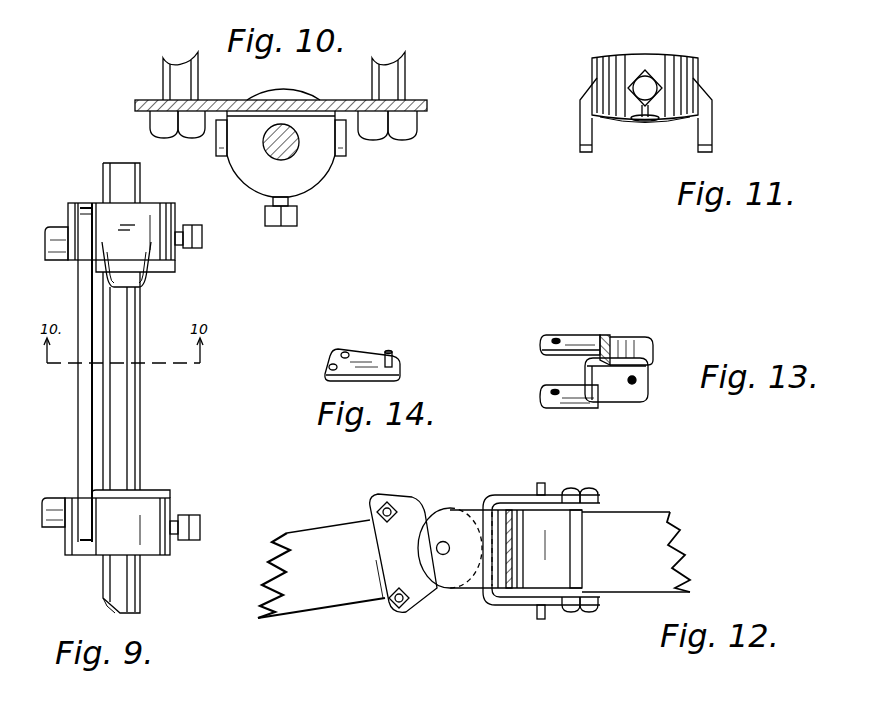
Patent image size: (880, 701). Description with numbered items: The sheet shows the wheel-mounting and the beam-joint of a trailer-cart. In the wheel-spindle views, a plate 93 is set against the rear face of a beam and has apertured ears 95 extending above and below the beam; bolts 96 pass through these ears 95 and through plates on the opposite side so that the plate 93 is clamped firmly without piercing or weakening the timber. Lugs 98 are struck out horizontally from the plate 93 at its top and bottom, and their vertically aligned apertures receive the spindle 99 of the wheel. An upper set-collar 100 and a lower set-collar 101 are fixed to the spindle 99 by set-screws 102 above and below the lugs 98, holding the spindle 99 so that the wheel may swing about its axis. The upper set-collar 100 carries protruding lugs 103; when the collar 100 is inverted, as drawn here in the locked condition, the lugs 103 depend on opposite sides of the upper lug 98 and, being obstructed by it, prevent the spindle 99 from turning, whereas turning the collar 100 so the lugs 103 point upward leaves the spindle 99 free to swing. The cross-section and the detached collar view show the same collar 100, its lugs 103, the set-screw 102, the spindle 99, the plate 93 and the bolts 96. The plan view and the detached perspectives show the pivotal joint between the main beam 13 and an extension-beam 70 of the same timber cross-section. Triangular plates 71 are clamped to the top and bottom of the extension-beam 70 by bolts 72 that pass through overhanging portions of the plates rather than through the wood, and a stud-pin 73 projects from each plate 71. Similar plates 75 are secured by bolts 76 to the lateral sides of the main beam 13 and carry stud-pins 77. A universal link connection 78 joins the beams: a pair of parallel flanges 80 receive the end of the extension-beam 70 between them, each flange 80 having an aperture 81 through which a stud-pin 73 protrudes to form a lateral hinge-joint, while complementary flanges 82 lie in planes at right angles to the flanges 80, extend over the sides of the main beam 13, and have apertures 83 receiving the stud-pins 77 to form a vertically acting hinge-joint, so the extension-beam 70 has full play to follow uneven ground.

In FIG. 12, the main beam 13 is at (636, 552).
In FIG. 12, the extension-beam 70 is at (321, 569).
In FIG. 14, the triangular plate 71 is at (360, 362).
In FIG. 12, the triangular plate 71 is at (390, 538).
In FIG. 12, the bolt 72 is at (392, 508).
In FIG. 14, the stud-pin 73 is at (392, 358).
In FIG. 12, the stud-pin 73 is at (437, 549).
In FIG. 12, the plate 75 is at (600, 500).
In FIG. 12, the bolt 76 is at (580, 552).
In FIG. 12, the stud-pin 77 is at (546, 486).
In FIG. 13, the universal link connection 78 is at (602, 342).
In FIG. 12, the universal link connection 78 is at (492, 495).
In FIG. 13, the flange 80 is at (637, 392).
In FIG. 13, the aperture 81 is at (633, 376).
In FIG. 13, the complementary flange 82 is at (548, 344).
In FIG. 13, the aperture 83 is at (557, 391).
In FIG. 9, the plate 93 is at (80, 405).
In FIG. 10, the plate 93 is at (215, 100).
In FIG. 9, the apertured ear 95 is at (85, 213).
In FIG. 9, the bolt 96 is at (60, 252).
In FIG. 10, the bolt 96 is at (170, 78).
In FIG. 9, the lug 98 is at (175, 268).
In FIG. 9, the spindle 99 is at (125, 587).
In FIG. 10, the spindle 99 is at (293, 148).
In FIG. 9, the upper set-collar 100 is at (165, 218).
In FIG. 10, the upper set-collar 100 is at (305, 180).
In FIG. 11, the upper set-collar 100 is at (686, 75).
In FIG. 9, the lower set-collar 101 is at (170, 548).
In FIG. 9, the set-screw 102 is at (202, 236).
In FIG. 10, the set-screw 102 is at (297, 215).
In FIG. 11, the set-screw 102 is at (643, 104).
In FIG. 9, the protruding lug 103 is at (135, 278).
In FIG. 10, the protruding lug 103 is at (346, 146).
In FIG. 11, the protruding lug 103 is at (580, 142).